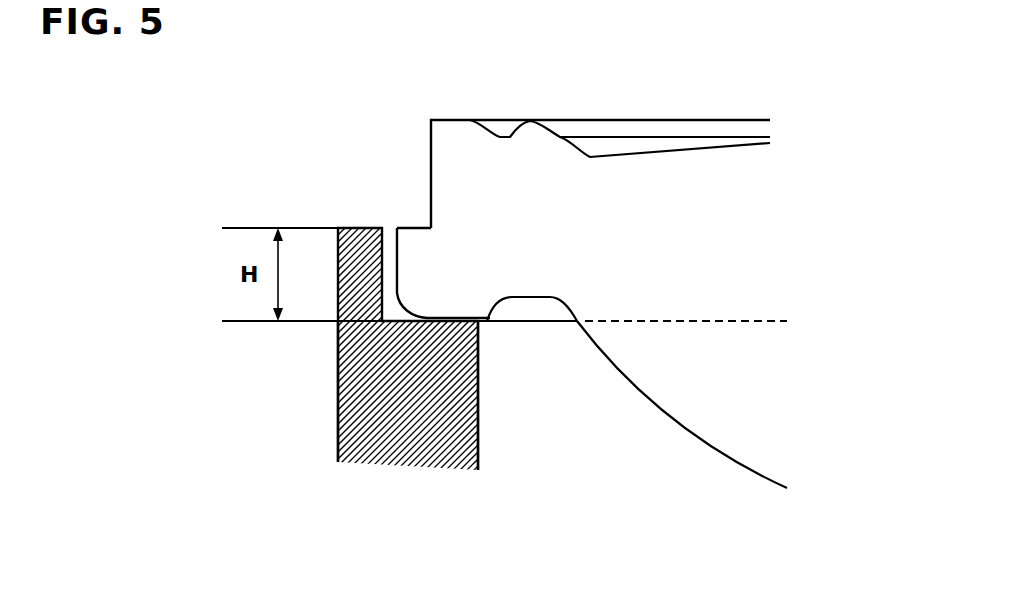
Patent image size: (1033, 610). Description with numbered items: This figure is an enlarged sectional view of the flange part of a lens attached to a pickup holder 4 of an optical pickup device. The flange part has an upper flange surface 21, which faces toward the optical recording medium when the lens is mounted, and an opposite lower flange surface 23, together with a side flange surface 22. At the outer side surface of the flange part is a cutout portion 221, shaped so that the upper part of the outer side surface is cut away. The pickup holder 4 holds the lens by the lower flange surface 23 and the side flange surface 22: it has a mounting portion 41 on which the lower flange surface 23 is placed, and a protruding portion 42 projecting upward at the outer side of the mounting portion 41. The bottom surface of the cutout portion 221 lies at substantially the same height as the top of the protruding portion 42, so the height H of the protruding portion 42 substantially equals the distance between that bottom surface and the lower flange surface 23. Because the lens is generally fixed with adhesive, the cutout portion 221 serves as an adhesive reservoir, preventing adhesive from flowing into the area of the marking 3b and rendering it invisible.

The upper flange surface 21 is at (443, 118).
The marking 3b is at (543, 120).
The cutout portion 221 is at (417, 215).
The side flange surface 22 is at (397, 258).
The lower flange surface 23 is at (490, 317).
The pickup holder 4 is at (403, 457).
The protruding portion 42 is at (332, 323).
The mounting portion 41 is at (450, 323).